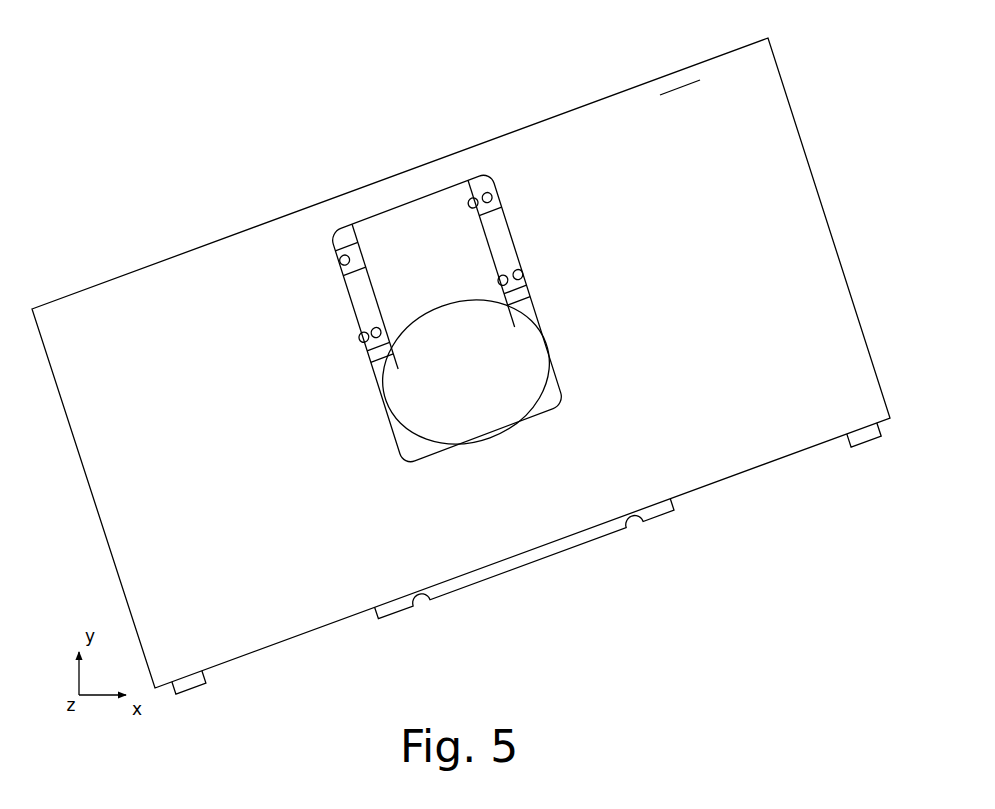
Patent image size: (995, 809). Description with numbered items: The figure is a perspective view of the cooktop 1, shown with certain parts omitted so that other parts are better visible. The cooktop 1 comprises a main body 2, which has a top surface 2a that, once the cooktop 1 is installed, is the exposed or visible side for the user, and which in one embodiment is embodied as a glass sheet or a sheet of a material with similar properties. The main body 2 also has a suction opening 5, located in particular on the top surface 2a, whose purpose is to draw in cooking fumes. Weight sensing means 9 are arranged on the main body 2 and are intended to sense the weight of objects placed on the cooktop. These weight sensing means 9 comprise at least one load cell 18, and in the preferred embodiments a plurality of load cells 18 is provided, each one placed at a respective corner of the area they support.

The cooktop 1 is at (143, 130).
The main body 2 is at (255, 224).
The top surface 2a is at (650, 107).
The suction opening 5 is at (547, 387).
The weight sensing means 9 is at (352, 253).
The load cell 18 is at (501, 281).